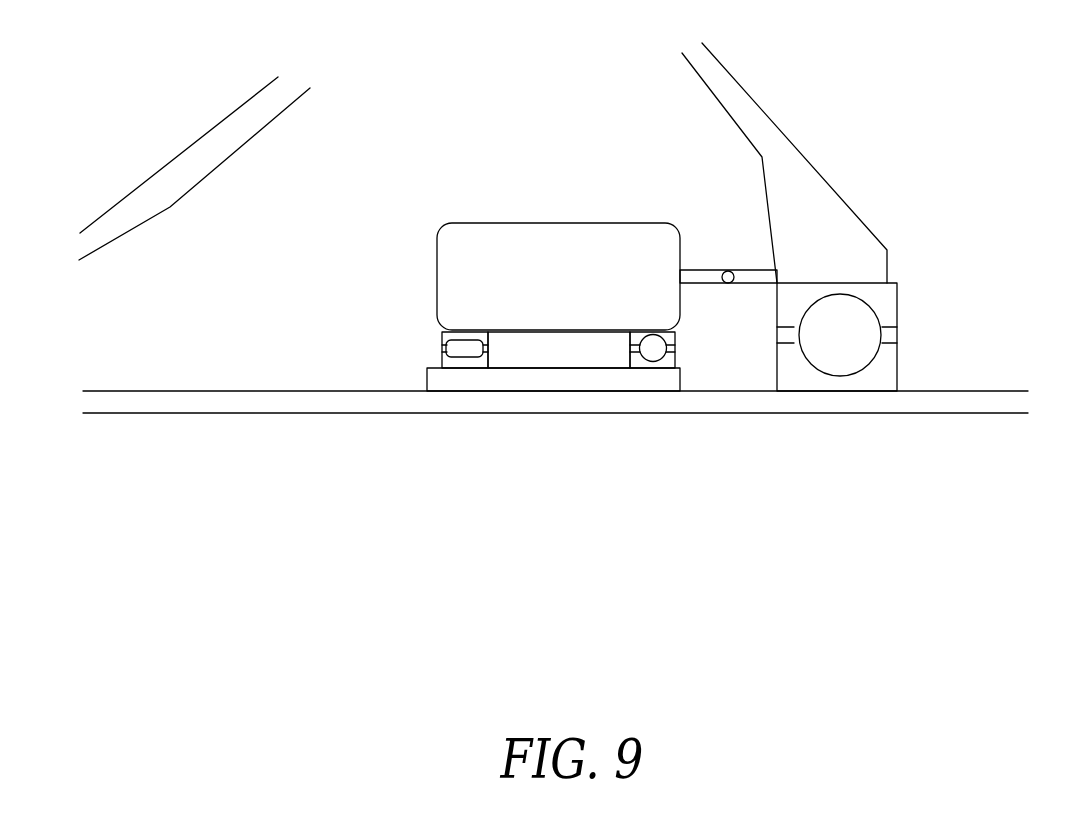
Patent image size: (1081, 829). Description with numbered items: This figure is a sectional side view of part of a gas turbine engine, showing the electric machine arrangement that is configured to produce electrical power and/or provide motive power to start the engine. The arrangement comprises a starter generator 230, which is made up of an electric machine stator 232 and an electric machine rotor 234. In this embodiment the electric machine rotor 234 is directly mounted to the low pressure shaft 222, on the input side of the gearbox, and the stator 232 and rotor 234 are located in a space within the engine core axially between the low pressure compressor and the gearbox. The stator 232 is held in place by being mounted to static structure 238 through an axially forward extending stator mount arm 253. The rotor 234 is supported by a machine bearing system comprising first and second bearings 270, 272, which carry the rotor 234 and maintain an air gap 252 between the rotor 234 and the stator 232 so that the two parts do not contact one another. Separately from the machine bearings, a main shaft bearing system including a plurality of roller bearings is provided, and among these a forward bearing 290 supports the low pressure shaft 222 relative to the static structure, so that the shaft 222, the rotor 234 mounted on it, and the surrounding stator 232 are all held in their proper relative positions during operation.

The low pressure shaft 222 is at (840, 413).
The starter generator 230 is at (558, 207).
The electric machine stator 232 is at (600, 223).
The electric machine rotor 234 is at (583, 380).
The static structure 238 is at (735, 80).
The air gap 252 is at (517, 352).
The stator mount arm 253 is at (748, 270).
The first bearing 270 is at (652, 311).
The second bearing 272 is at (462, 303).
The forward bearing 290 is at (895, 270).